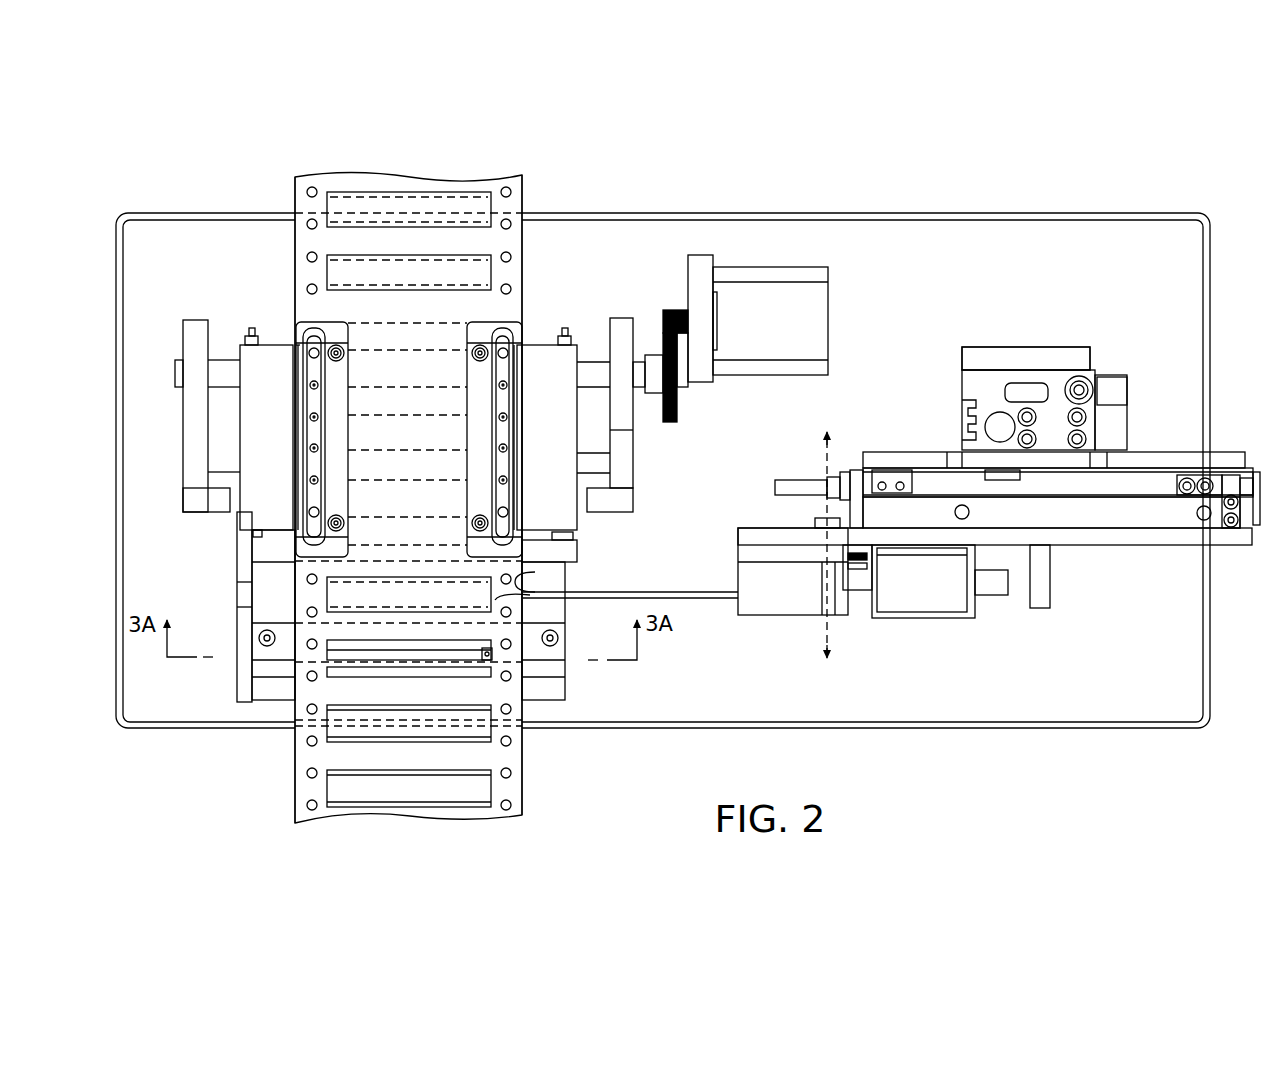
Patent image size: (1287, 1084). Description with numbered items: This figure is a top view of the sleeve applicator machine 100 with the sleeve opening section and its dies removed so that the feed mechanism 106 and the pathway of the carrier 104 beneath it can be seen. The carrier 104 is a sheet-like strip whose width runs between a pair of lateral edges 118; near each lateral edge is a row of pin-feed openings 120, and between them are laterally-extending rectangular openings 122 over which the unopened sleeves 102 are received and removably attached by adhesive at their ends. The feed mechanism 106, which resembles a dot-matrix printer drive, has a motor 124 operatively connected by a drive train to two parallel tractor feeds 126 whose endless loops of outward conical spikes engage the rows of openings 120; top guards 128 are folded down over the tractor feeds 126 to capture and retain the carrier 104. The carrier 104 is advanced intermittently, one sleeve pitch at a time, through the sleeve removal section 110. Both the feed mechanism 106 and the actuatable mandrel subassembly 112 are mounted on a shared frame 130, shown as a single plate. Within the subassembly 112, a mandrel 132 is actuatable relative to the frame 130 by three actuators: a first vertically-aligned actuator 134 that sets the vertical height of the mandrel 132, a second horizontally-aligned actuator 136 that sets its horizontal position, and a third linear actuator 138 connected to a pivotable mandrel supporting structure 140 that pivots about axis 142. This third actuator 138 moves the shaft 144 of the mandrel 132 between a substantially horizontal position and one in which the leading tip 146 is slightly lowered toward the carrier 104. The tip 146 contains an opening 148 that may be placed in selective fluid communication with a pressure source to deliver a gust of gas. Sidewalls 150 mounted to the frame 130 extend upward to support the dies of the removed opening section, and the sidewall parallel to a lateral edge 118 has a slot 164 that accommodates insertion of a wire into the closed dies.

The sleeve applicator machine 100 is at (990, 170).
The sleeve 102 is at (485, 205).
The carrier 104 is at (519, 300).
The feed mechanism 106 is at (645, 264).
The sleeve removal section 110 is at (512, 562).
The actuatable mandrel subassembly 112 is at (890, 400).
The lateral edges 118 is at (294, 796).
The openings 120 is at (306, 257).
The rectangular openings 122 is at (328, 678).
The motor 124 is at (822, 300).
The tractor feeds 126 is at (313, 420).
The top guards 128 is at (340, 400).
The frame 130 is at (1016, 700).
The mandrel 132 is at (651, 590).
The first vertically-aligned actuator 134 is at (1055, 420).
The second horizontally-aligned actuator 136 is at (1165, 505).
The third actuator 138 is at (918, 600).
The pivotable mandrel supporting structure 140 is at (801, 650).
The axis 142 is at (825, 458).
The shaft 144 is at (690, 600).
The leading tip 146 is at (512, 592).
The opening 148 is at (535, 572).
The sidewalls 150 is at (245, 642).
The slot 164 is at (243, 594).